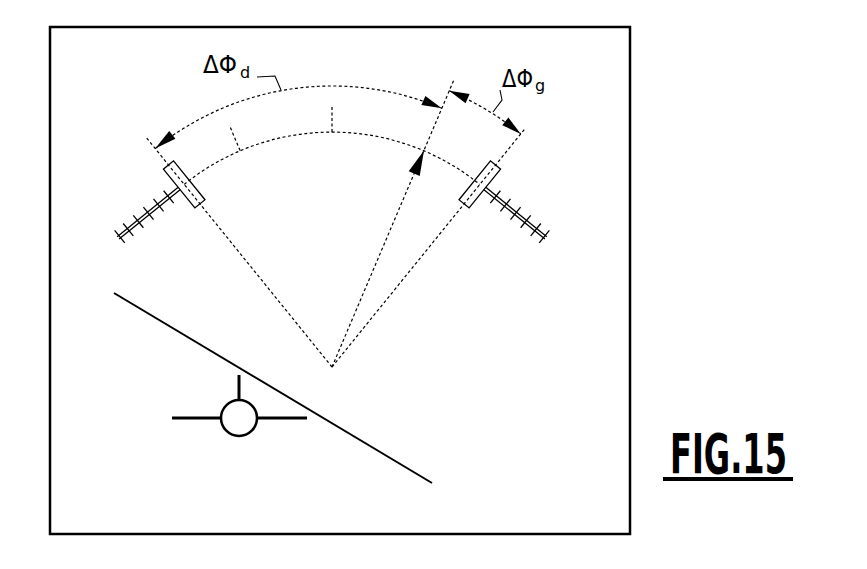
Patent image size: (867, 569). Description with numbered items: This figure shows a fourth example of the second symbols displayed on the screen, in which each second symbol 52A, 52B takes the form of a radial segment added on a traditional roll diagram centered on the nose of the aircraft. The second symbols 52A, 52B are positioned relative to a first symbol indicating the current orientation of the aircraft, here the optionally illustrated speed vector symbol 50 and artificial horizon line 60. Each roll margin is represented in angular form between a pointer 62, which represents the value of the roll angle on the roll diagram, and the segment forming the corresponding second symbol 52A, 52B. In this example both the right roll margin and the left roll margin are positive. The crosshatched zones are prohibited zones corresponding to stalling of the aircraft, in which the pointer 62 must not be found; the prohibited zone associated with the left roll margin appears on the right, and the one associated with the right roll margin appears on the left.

The speed vector symbol 50 is at (250, 438).
The second symbol 52A is at (204, 186).
The second symbol 52B is at (503, 177).
The artificial horizon line 60 is at (388, 453).
The pointer 62 is at (423, 173).